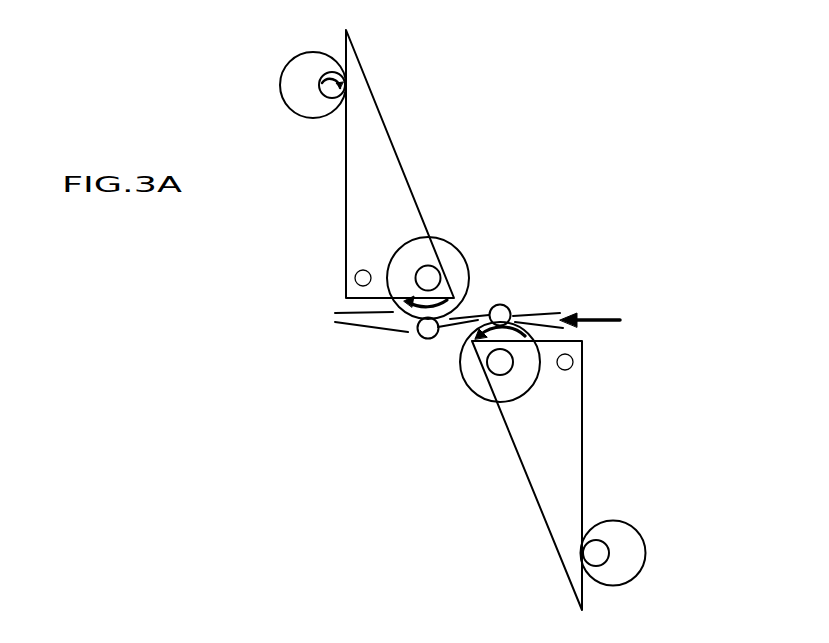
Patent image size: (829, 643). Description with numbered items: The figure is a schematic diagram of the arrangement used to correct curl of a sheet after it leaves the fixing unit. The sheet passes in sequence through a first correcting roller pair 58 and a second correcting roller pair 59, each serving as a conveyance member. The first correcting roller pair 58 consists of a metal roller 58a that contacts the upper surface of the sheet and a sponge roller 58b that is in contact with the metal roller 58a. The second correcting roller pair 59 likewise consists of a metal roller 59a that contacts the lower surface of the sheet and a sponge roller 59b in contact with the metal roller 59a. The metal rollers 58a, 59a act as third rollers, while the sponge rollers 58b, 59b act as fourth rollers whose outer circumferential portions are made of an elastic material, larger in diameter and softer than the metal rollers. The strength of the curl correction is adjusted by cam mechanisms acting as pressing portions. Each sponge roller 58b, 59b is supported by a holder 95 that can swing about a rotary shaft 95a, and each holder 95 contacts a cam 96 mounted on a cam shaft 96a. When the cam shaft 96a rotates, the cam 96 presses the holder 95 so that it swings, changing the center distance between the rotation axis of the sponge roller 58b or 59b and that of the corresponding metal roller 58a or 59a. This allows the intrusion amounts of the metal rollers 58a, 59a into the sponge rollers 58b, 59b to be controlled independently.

The first correcting roller pair 58 is at (528, 305).
The metal roller 58a is at (509, 305).
The sponge roller 58b is at (490, 374).
The second correcting roller pair 59 is at (395, 338).
The metal roller 59a is at (418, 339).
The sponge roller 59b is at (422, 266).
The holder 95 is at (387, 135).
The rotary shaft 95a is at (355, 276).
The cam 96 is at (280, 82).
The cam shaft 96a is at (322, 95).